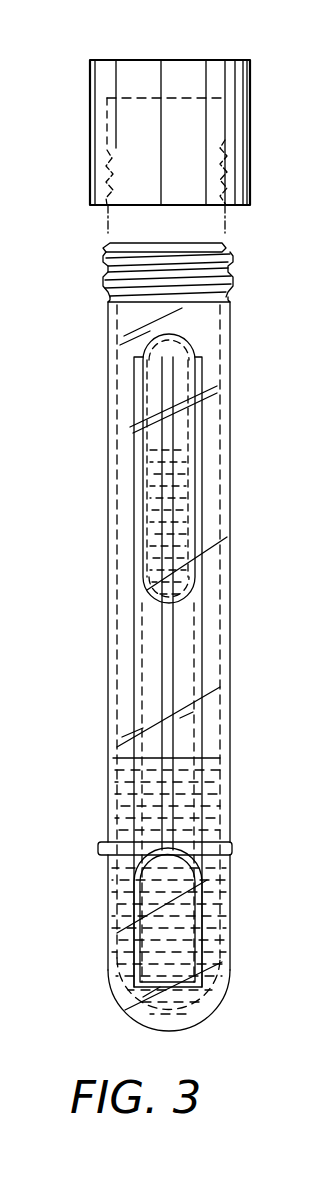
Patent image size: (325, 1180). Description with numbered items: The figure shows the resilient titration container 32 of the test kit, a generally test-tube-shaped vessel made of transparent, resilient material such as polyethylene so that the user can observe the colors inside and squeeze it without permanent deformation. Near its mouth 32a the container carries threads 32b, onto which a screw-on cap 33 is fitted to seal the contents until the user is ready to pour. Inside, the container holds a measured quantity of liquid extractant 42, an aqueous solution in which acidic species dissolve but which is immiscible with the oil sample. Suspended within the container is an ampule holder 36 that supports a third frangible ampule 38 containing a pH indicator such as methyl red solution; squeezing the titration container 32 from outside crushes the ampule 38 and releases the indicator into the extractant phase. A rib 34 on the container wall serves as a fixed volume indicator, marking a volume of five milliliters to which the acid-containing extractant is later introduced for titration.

The titration container 32 is at (108, 548).
The mouth 32a is at (187, 243).
The threads 32b is at (172, 262).
The cap 33 is at (181, 60).
The rib 34 is at (125, 847).
The ampule holder 36 is at (152, 627).
The third frangible ampule 38 is at (165, 438).
The liquid extractant 42 is at (140, 995).